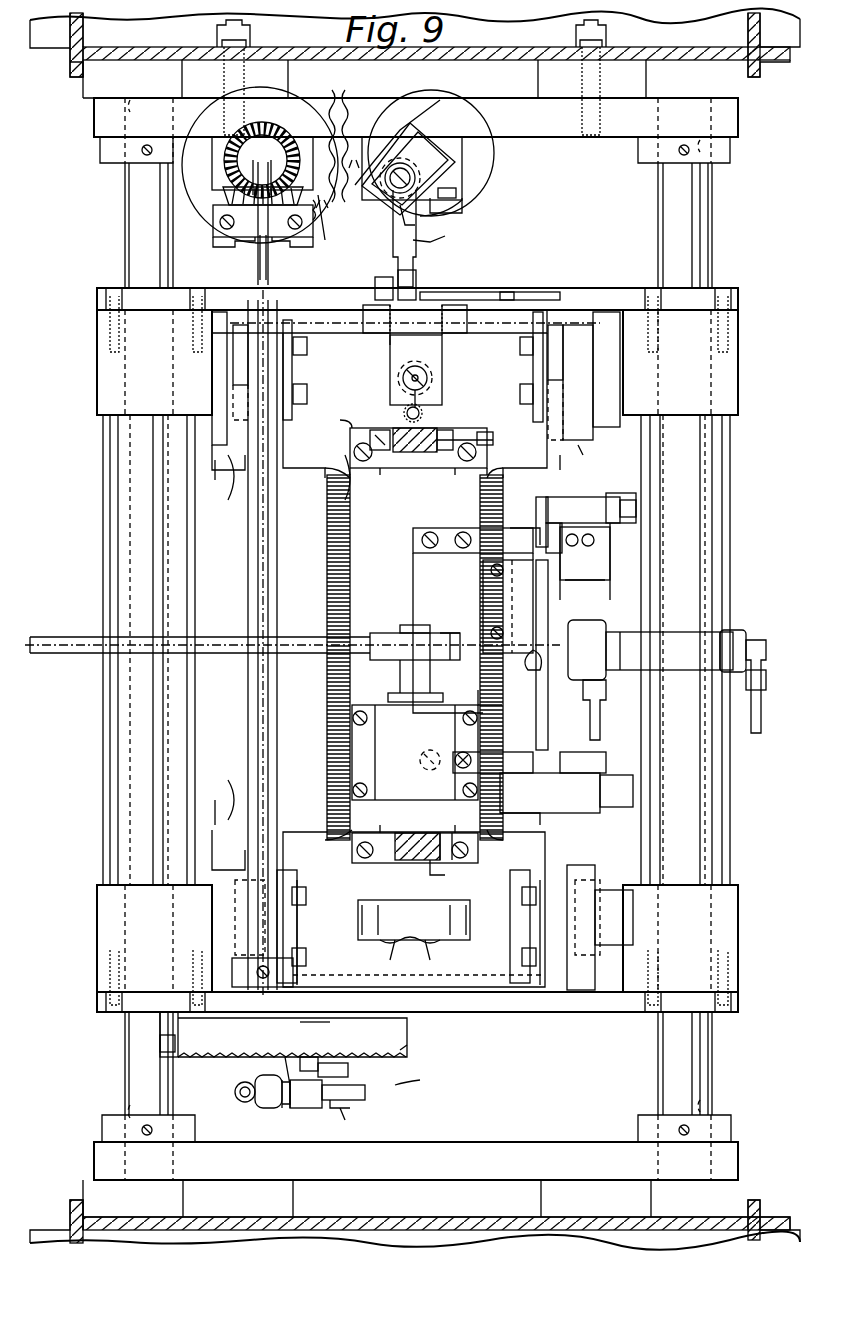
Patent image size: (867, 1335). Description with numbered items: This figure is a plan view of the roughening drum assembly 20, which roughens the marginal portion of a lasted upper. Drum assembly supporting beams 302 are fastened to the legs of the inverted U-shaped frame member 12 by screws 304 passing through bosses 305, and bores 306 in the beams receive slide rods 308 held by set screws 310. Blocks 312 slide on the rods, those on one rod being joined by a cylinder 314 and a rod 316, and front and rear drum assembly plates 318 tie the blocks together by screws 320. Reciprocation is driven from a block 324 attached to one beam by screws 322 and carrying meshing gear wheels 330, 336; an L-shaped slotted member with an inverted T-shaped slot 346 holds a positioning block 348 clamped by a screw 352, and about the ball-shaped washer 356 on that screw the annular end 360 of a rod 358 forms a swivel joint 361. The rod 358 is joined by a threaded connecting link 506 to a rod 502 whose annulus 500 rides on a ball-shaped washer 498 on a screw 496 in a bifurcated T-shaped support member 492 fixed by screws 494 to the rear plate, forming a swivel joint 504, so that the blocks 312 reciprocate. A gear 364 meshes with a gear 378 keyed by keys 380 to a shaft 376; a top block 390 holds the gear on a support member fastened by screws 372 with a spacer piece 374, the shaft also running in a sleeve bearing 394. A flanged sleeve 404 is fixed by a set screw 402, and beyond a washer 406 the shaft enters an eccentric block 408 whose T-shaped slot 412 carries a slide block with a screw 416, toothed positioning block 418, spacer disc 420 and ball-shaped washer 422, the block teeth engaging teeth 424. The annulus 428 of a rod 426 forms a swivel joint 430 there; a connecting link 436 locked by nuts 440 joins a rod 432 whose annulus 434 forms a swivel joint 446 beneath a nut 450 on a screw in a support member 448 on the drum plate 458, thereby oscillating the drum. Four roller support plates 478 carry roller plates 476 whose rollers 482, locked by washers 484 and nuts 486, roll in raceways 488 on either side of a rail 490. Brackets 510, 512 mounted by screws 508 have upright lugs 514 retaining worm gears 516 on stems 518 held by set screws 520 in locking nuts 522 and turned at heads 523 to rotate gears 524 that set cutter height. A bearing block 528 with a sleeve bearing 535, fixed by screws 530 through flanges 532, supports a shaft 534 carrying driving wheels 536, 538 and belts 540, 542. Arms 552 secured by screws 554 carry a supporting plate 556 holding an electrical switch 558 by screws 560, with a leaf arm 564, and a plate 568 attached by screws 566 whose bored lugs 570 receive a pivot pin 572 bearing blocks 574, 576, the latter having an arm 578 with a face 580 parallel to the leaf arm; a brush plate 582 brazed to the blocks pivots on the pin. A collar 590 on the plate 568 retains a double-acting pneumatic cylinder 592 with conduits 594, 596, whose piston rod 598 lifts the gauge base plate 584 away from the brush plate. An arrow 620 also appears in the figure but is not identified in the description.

The frame wall 12 is at (760, 50).
The machine 20 is at (779, 222).
The mounting plate 302 is at (738, 112).
The bolt 304 is at (224, 30).
The spacer block 305 is at (645, 73).
The bore 306 is at (132, 100).
The guide column 308 is at (137, 175).
The clamp screw 310 is at (142, 150).
The end plate 312 is at (98, 338).
The bearing sleeve 314 is at (115, 483).
The guide housing 316 is at (145, 438).
The cross bar 318 is at (738, 300).
The bolt head 320 is at (110, 290).
The bracket 322 is at (462, 205).
The housing 324 is at (215, 160).
The sprocket rim 330 is at (470, 215).
The chain 336 is at (333, 110).
The arm 346 is at (445, 97).
The crank block 348 is at (430, 140).
The clip 352 is at (458, 190).
The link 356 is at (420, 210).
The pivot 358 is at (440, 240).
The crank pin 360 is at (400, 157).
The connecting rod 361 is at (392, 235).
The ring gear 364 is at (290, 138).
The foot 372 is at (218, 250).
The bevel gear 374 is at (226, 195).
The drive shaft 376 is at (257, 536).
The guard 378 is at (322, 220).
The spindle 380 is at (258, 270).
The gear housing 390 is at (220, 225).
The tie bar 394 is at (290, 298).
The screw 402 is at (258, 968).
The end block 404 is at (240, 990).
The rack bar 406 is at (300, 1020).
The pin 408 is at (408, 1030).
The stop 412 is at (160, 1043).
The lever 416 is at (345, 1122).
The pawl 418 is at (348, 1068).
The spring 420 is at (398, 1085).
The pivot pin 422 is at (352, 1108).
The tooth 424 is at (407, 1048).
The slide 426 is at (308, 1108).
The shaft 428 is at (355, 1100).
The latch assembly 430 is at (412, 1094).
The collar 432 is at (287, 1105).
The knob 434 is at (265, 1105).
The link 436 is at (287, 1060).
The pin 440 is at (283, 1080).
The direction 446 is at (229, 1100).
The catch 448 is at (305, 1058).
The button 450 is at (240, 1085).
The rack 458 is at (340, 540).
The bracket 476 is at (600, 427).
The side plate 478 is at (292, 370).
The bushing 482 is at (238, 350).
The carriage housing 484 is at (520, 932).
The nut 486 is at (307, 360).
The spring 488 is at (670, 892).
The stud 490 is at (560, 860).
The bar 492 is at (542, 292).
The block 494 is at (500, 280).
The pin 496 is at (424, 378).
The shaft 498 is at (442, 393).
The cap 500 is at (430, 366).
The plate 502 is at (406, 345).
The pulley 504 is at (387, 406).
The post 506 is at (416, 278).
The fillet 508 is at (335, 478).
The plate 510 is at (365, 878).
The cover 512 is at (346, 424).
The bearing 514 is at (445, 468).
The worm 516 is at (416, 644).
The shaft 518 is at (440, 432).
The worm housing 520 is at (355, 442).
The screw 522 is at (382, 478).
The pin 523 is at (492, 445).
The worm gear 524 is at (404, 413).
The rack 528 is at (440, 725).
The screw 530 is at (355, 715).
The screw 532 is at (355, 724).
The pinion 534 is at (410, 675).
The collar 535 is at (405, 695).
The cover 536 is at (425, 945).
The key 538 is at (405, 630).
The cap 540 is at (398, 945).
The shaft 542 is at (220, 650).
The plate 552 is at (413, 542).
The screw 554 is at (455, 535).
The block 556 is at (425, 572).
The slide 558 is at (495, 597).
The screw 560 is at (492, 574).
The lug 564 is at (510, 541).
The bracket 566 is at (585, 553).
The plate 568 is at (583, 585).
The arm 570 is at (562, 540).
The rod 572 is at (612, 570).
The stop 574 is at (595, 800).
The pin 576 is at (636, 505).
The block 578 is at (583, 510).
The plate 580 is at (536, 522).
The clamp 582 is at (636, 512).
The plate 584 is at (525, 655).
The cylinder cap 590 is at (588, 632).
The cylinder 592 is at (700, 640).
The fitting 594 is at (762, 702).
The fitting 596 is at (590, 722).
The lug 598 is at (530, 650).
The direction arrow 620 is at (319, 585).